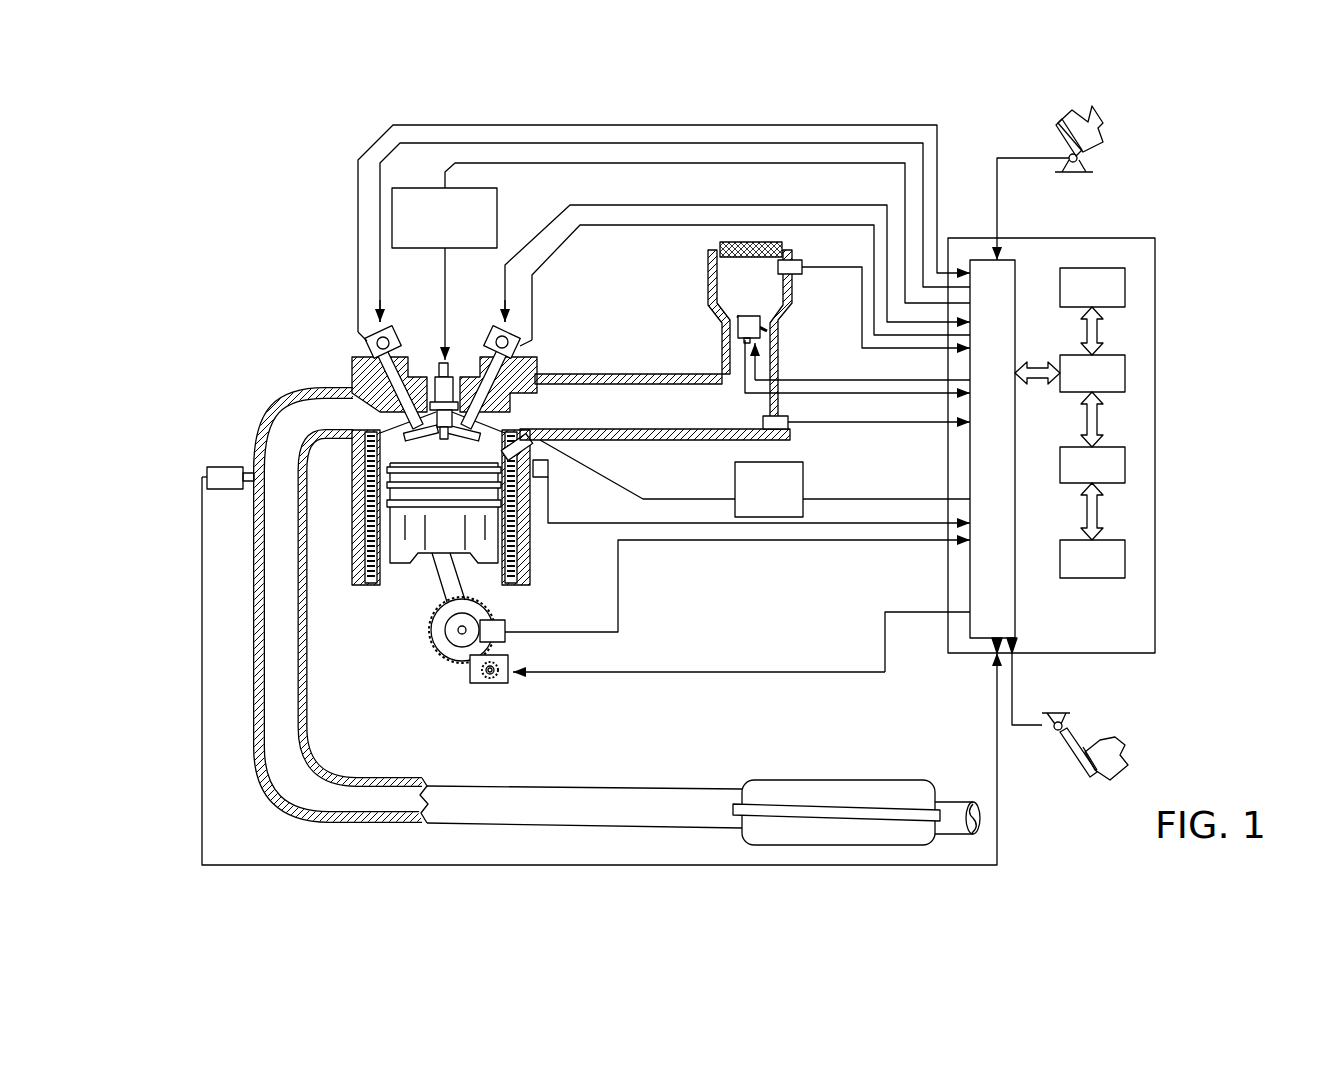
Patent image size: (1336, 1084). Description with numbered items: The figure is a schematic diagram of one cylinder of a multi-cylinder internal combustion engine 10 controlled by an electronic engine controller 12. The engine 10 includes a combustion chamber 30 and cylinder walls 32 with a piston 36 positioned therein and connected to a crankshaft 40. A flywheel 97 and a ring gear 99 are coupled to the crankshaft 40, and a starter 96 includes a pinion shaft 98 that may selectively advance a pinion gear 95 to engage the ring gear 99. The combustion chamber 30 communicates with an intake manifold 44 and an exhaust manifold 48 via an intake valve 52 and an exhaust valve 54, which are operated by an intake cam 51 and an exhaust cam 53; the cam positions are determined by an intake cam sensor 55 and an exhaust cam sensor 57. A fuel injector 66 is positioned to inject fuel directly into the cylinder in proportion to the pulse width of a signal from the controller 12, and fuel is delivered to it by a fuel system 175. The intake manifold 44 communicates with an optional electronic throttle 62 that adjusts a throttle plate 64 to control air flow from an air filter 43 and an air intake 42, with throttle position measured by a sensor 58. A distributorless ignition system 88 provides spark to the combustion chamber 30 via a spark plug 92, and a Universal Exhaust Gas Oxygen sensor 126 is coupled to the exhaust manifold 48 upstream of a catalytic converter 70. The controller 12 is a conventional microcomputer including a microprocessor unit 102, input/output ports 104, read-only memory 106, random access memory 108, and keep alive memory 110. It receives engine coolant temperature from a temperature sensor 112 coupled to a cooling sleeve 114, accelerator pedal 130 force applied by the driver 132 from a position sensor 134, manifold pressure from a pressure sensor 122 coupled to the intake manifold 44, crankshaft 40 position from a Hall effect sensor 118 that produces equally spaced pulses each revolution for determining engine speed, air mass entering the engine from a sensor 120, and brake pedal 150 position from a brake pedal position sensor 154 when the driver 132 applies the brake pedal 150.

The internal combustion engine 10 is at (290, 316).
The electronic engine controller 12 is at (1155, 240).
The combustion chamber 30 is at (370, 533).
The cylinder walls 32 is at (390, 577).
The piston 36 is at (425, 565).
The crankshaft 40 is at (452, 655).
The air intake 42 is at (750, 339).
The air filter 43 is at (720, 248).
The intake manifold 44 is at (655, 407).
The exhaust manifold 48 is at (500, 610).
The intake cam 51 is at (495, 330).
The intake valve 52 is at (500, 415).
The exhaust cam 53 is at (388, 332).
The exhaust valve 54 is at (398, 412).
The intake cam sensor 55 is at (515, 345).
The exhaust cam sensor 57 is at (375, 343).
The throttle position sensor 58 is at (738, 336).
The electronic throttle 62 is at (762, 322).
The throttle plate 64 is at (736, 322).
The fuel injector 66 is at (540, 456).
The catalytic converter 70 is at (780, 780).
The distributorless ignition system 88 is at (400, 188).
The spark plug 92 is at (448, 360).
The pinion gear 95 is at (495, 685).
The starter 96 is at (508, 683).
The flywheel 97 is at (435, 633).
The pinion shaft 98 is at (484, 678).
The ring gear 99 is at (462, 665).
The microprocessor unit 102 is at (1125, 372).
The input/output ports 104 is at (1016, 265).
The read-only memory 106 is at (1125, 281).
The random access memory 108 is at (1125, 465).
The keep alive memory 110 is at (1125, 558).
The temperature sensor 112 is at (548, 478).
The cooling sleeve 114 is at (528, 548).
The Hall effect sensor 118 is at (505, 625).
The air mass sensor 120 is at (795, 262).
The pressure sensor 122 is at (785, 430).
The Universal Exhaust Gas Oxygen sensor 126 is at (207, 471).
The accelerator pedal 130 is at (1060, 130).
The driver 132 is at (1103, 125).
The position sensor 134 is at (1080, 163).
The brake pedal 150 is at (1090, 770).
The brake pedal position sensor 154 is at (1047, 722).
The fuel system 175 is at (852, 489).